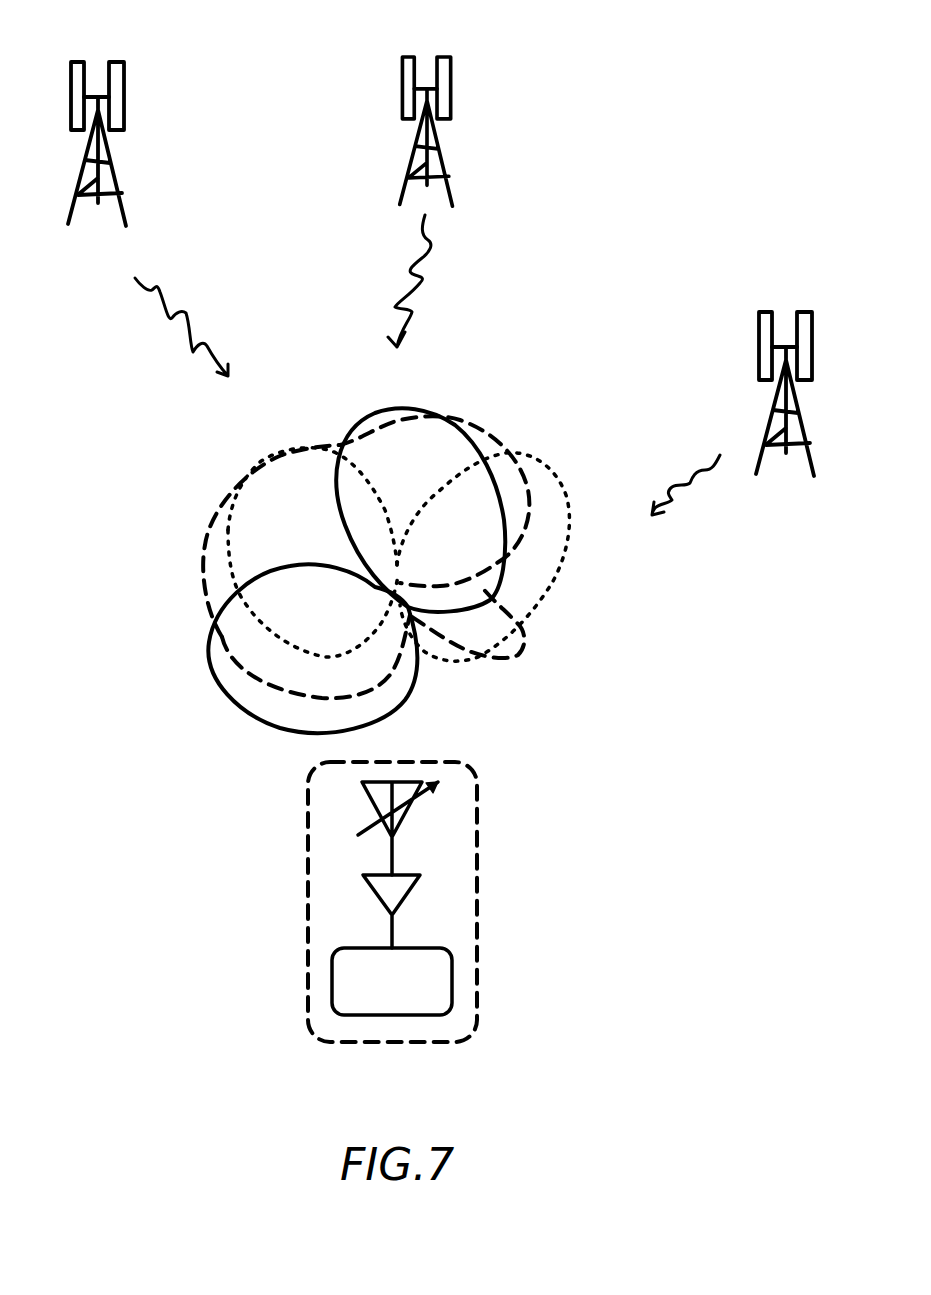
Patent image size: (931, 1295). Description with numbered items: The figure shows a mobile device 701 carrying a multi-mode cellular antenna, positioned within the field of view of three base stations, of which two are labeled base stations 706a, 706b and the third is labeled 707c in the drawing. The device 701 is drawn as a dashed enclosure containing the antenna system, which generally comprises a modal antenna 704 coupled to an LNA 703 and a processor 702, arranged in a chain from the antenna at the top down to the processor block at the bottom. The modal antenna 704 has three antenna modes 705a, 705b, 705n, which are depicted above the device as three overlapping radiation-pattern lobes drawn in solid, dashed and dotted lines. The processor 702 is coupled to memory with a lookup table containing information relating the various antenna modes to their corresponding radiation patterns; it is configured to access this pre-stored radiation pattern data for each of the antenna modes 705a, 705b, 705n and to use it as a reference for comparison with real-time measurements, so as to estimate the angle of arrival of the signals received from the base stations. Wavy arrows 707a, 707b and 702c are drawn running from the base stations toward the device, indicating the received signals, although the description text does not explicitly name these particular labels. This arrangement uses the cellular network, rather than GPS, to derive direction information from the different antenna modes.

The device 701 is at (383, 1045).
The processor 702 is at (452, 980).
The signal from base station 702c is at (672, 488).
The LNA 703 is at (410, 888).
The modal antenna 704 is at (412, 800).
The antenna mode 705a is at (222, 693).
The antenna mode 705b is at (488, 437).
The antenna mode 705n is at (558, 570).
The base station 706a is at (128, 91).
The base station 706b is at (452, 90).
The signal from base station 707a is at (185, 312).
The signal from base station 707b is at (420, 280).
The base station 707c is at (755, 347).